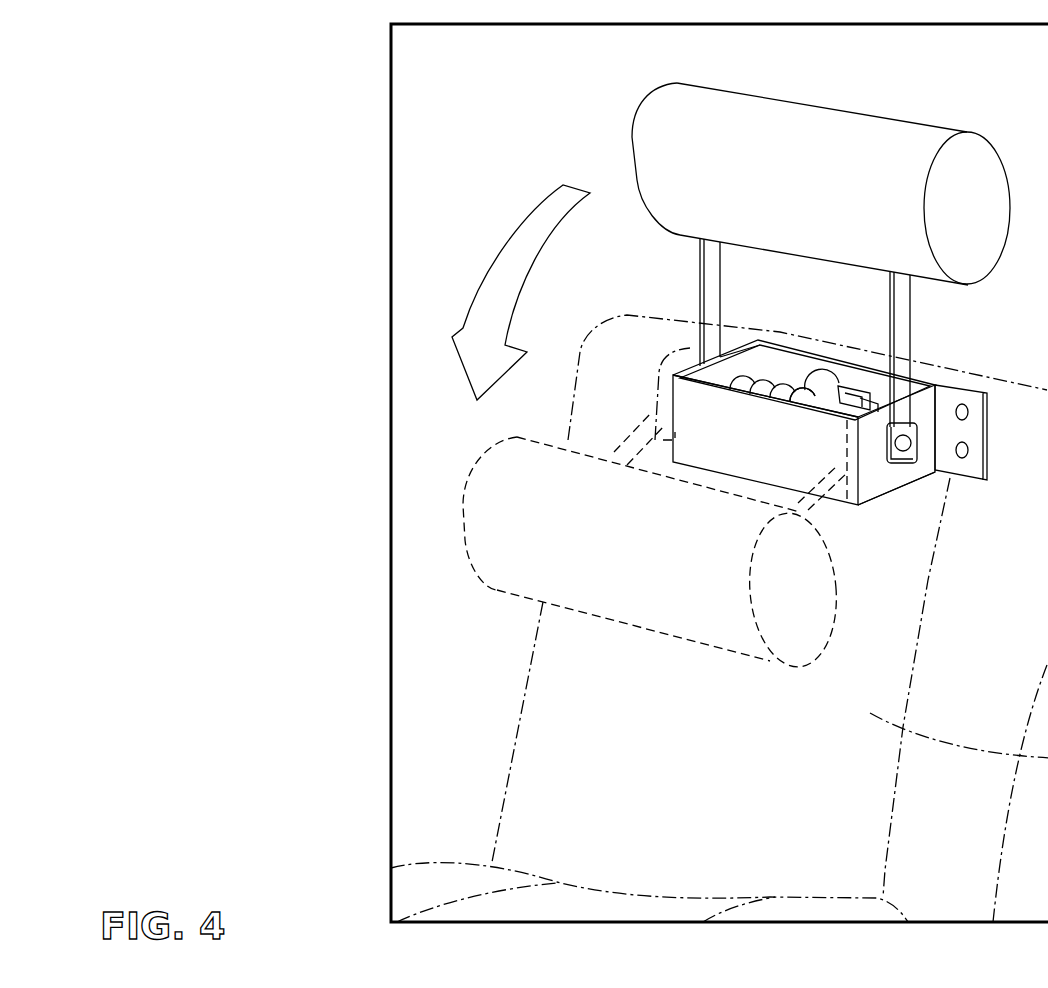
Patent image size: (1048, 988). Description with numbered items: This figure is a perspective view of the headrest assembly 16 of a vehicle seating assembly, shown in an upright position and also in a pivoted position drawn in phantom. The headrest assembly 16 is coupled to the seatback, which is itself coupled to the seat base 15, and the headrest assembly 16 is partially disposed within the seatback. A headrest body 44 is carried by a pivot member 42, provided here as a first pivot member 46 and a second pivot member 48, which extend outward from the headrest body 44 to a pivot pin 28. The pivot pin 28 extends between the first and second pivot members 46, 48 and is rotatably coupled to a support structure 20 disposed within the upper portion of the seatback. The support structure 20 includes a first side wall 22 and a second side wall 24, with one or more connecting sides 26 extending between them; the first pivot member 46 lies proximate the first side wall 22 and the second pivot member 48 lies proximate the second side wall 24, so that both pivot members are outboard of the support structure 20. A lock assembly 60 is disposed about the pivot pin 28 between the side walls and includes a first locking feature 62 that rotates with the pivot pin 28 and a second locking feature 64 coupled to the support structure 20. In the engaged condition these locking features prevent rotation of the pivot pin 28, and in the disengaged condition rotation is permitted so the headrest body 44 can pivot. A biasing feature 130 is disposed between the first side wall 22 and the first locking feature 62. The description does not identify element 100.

The seat base 15 is at (443, 880).
The headrest assembly 16 is at (736, 354).
The support structure 20 is at (738, 454).
The first side wall 22 is at (706, 376).
The second side wall 24 is at (924, 453).
The connecting side 26 is at (843, 503).
The pivot pin 28 is at (919, 437).
The pivot member 42 is at (756, 432).
The headrest body 44 is at (771, 189).
The first pivot member 46 is at (699, 271).
The second pivot member 48 is at (906, 325).
The lock assembly 60 is at (828, 375).
The first locking feature 62 is at (810, 381).
The second locking feature 64 is at (861, 396).
The actuator 100 is at (813, 410).
The biasing feature 130 is at (741, 392).